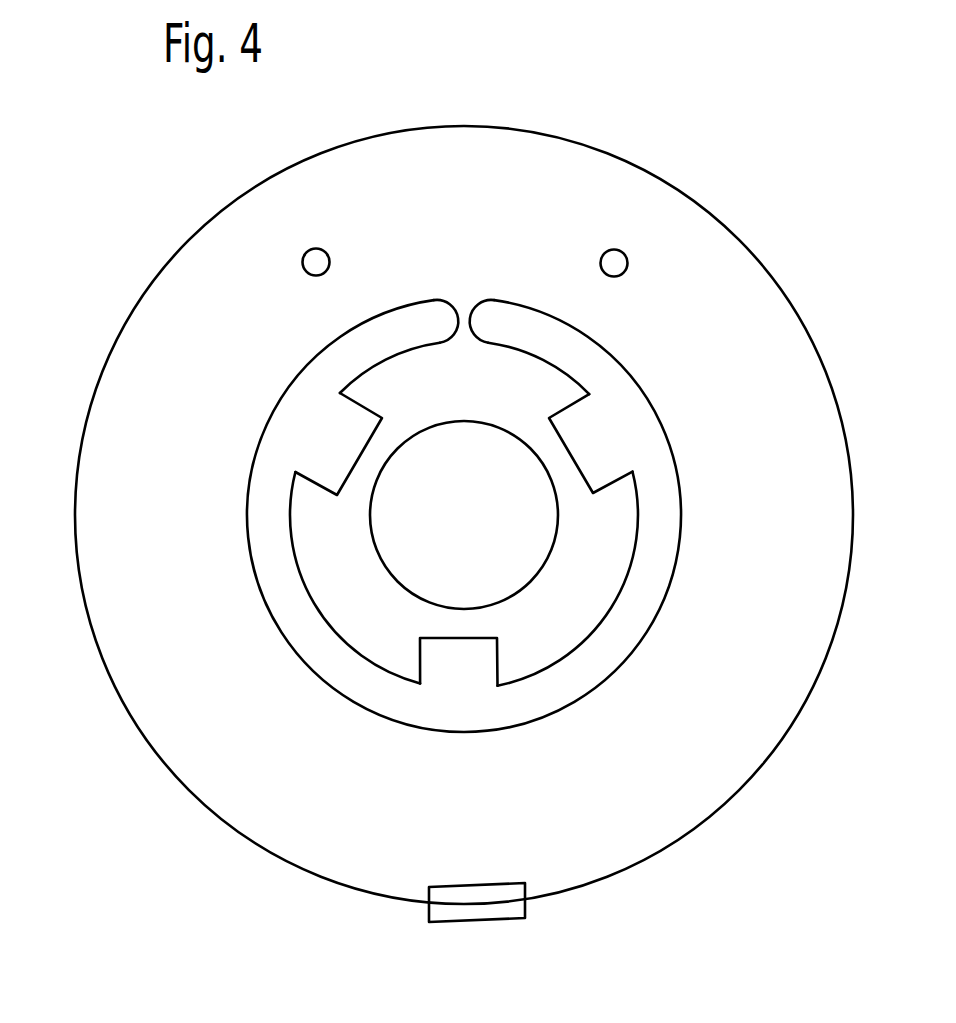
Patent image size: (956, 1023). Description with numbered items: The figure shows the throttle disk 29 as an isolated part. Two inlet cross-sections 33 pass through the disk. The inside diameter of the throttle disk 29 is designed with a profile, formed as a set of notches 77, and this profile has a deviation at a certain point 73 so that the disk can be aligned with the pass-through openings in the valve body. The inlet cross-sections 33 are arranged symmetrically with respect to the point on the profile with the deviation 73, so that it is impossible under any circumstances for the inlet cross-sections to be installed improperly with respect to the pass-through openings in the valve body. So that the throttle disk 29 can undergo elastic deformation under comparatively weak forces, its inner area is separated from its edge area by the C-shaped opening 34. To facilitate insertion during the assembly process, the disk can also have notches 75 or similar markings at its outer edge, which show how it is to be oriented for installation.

The throttle disk 29 is at (63, 571).
The inlet cross-sections 33 is at (317, 263).
The C-shaped opening 34 is at (565, 692).
The deviation point 73 is at (414, 640).
The notches 75 is at (513, 912).
The set of notches 77 is at (332, 466).